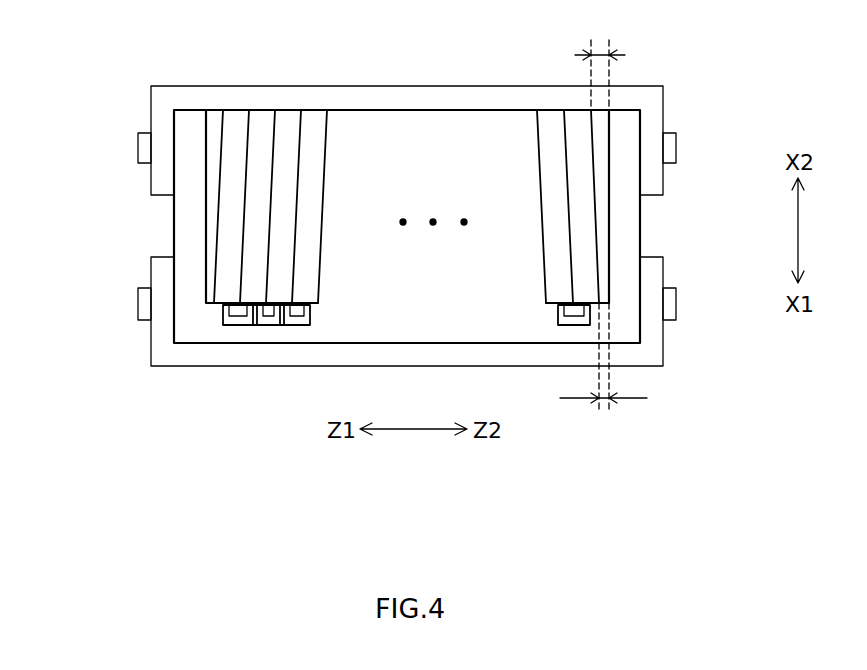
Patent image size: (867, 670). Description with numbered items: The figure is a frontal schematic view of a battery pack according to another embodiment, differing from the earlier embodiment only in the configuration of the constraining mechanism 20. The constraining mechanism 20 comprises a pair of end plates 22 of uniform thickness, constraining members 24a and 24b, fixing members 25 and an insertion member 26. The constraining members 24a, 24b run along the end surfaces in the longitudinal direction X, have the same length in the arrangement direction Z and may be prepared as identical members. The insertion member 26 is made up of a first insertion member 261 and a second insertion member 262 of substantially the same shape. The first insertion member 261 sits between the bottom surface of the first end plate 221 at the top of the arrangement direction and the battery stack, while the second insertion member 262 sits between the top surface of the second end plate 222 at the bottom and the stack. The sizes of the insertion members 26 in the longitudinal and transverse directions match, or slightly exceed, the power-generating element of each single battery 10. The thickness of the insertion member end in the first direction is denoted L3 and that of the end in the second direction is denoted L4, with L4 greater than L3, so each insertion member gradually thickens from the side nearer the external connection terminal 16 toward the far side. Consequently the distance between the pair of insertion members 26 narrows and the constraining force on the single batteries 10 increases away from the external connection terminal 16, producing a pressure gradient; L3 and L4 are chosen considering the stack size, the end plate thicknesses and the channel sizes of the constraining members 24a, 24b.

The constraining mechanism 20 is at (140, 85).
The single battery 10 is at (325, 161).
The external connection terminal 16 is at (310, 315).
The pair of end plates 22 is at (389, 234).
The first end plate 221 is at (180, 329).
The second end plate 222 is at (622, 273).
The constraining member 24a is at (665, 336).
The constraining member 24b is at (665, 116).
The fixing members 25 is at (138, 152).
The insertion member 26 is at (482, 168).
The first insertion member 261 is at (213, 117).
The second insertion member 262 is at (603, 210).
The thickness of the end in the first direction X1 L3 is at (603, 374).
The thickness of the end in the second direction X2 L4 is at (600, 59).